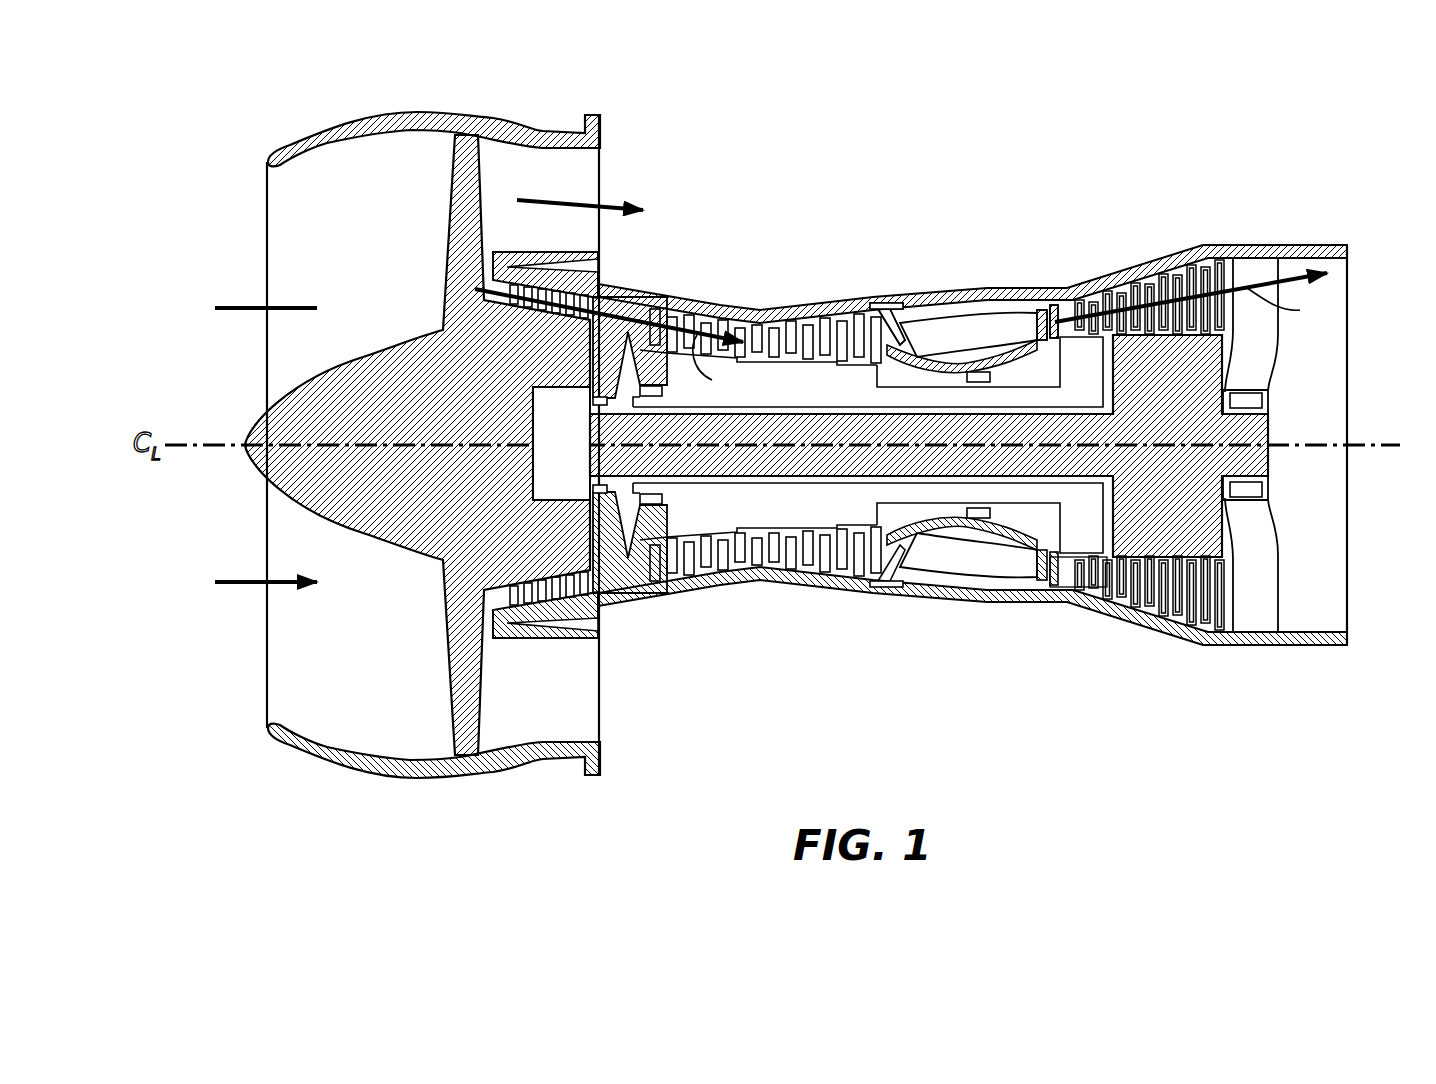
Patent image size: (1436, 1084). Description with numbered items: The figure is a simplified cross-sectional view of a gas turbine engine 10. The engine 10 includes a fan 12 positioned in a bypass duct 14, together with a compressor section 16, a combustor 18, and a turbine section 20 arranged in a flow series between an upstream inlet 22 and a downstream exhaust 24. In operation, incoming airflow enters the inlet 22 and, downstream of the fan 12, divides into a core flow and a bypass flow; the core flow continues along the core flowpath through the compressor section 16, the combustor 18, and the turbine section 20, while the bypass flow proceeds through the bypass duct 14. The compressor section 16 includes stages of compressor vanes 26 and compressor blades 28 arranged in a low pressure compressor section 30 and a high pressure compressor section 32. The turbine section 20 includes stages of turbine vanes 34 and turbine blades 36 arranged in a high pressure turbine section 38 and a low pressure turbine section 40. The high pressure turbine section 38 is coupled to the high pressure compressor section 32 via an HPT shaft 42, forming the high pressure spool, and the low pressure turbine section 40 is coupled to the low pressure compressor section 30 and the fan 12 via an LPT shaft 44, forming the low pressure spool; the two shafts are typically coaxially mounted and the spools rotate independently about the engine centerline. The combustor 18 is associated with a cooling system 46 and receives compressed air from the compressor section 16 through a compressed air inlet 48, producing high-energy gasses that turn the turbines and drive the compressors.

The gas turbine engine 10 is at (1243, 163).
The fan 12 is at (465, 272).
The bypass duct 14 is at (590, 166).
The compressor section 16 is at (782, 700).
The combustor 18 is at (965, 332).
The turbine section 20 is at (1110, 680).
The inlet 22 is at (235, 245).
The exhaust 24 is at (1323, 383).
The compressor vanes 26 is at (783, 333).
The compressor blades 28 is at (765, 540).
The low pressure compressor section 30 is at (492, 645).
The high pressure compressor section 32 is at (877, 593).
The turbine vanes 34 is at (1053, 305).
The turbine blades 36 is at (1065, 305).
The high pressure turbine section 38 is at (1107, 615).
The low pressure turbine section 40 is at (1222, 650).
The HPT shaft 42 is at (978, 393).
The LPT shaft 44 is at (1262, 462).
The cooling system 46 is at (561, 443).
The compressed air inlet 48 is at (730, 310).